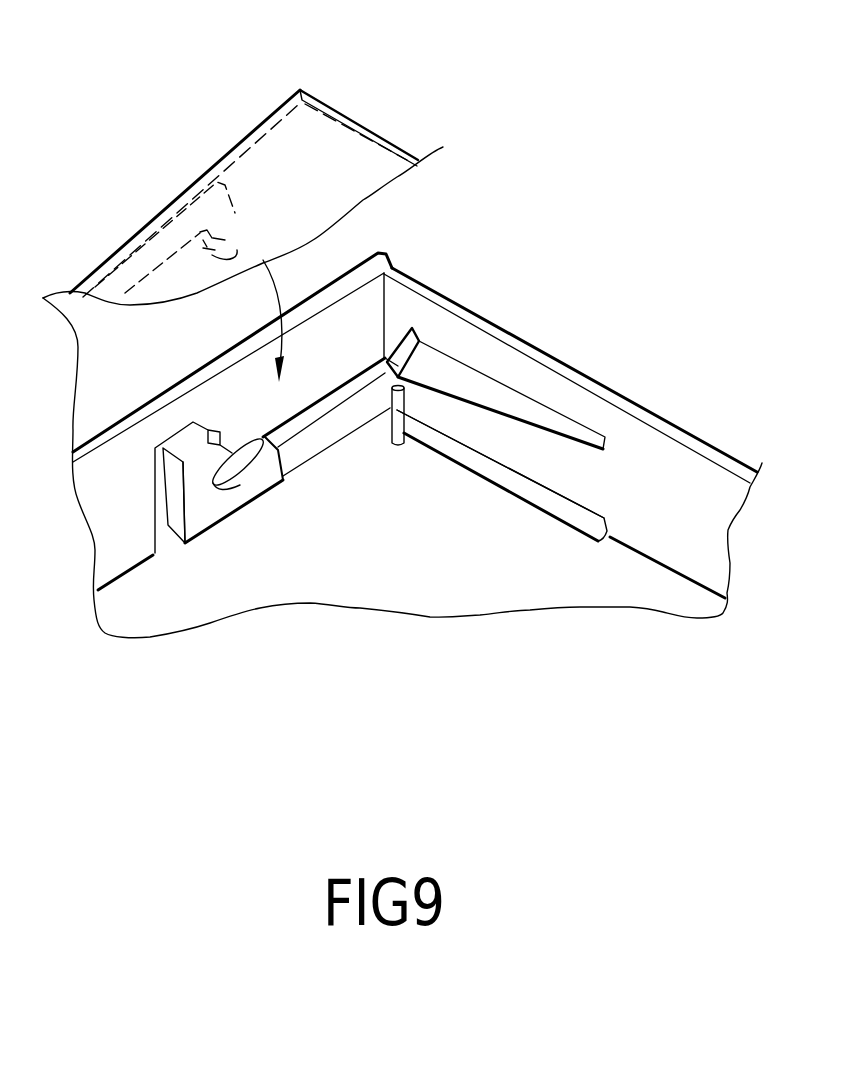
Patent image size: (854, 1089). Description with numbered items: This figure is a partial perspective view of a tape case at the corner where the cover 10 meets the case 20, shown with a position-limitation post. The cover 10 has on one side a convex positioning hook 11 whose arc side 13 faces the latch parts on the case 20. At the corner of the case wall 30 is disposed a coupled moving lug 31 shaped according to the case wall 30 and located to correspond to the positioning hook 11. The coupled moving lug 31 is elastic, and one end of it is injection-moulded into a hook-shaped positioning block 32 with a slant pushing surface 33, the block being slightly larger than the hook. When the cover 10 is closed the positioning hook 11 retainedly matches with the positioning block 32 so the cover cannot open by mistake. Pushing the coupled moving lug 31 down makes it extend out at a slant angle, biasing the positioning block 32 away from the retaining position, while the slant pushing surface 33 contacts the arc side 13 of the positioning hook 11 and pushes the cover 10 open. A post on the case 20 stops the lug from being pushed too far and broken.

The cover 10 is at (352, 170).
The positioning hook 11 is at (213, 218).
The arc side 13 is at (238, 247).
The case 20 is at (583, 577).
The case wall 30 is at (677, 482).
The coupled moving lug 31 is at (473, 408).
The positioning block 32 is at (180, 443).
The slant pushing surface 33 is at (250, 470).